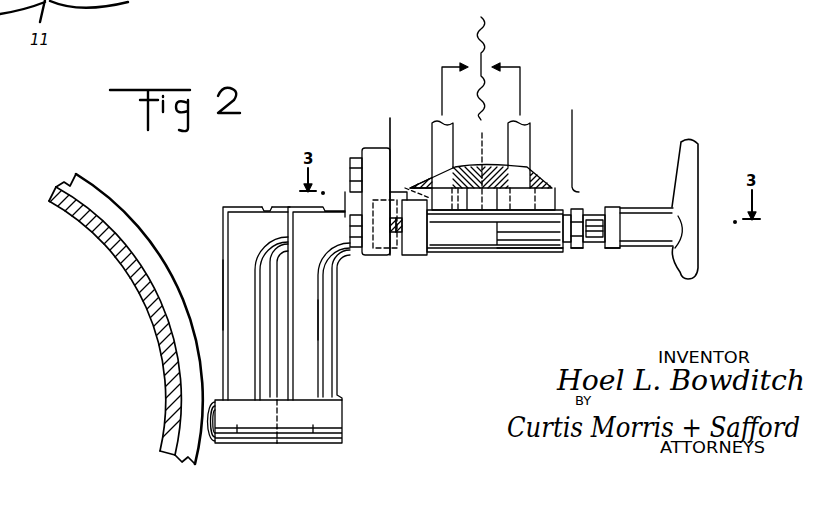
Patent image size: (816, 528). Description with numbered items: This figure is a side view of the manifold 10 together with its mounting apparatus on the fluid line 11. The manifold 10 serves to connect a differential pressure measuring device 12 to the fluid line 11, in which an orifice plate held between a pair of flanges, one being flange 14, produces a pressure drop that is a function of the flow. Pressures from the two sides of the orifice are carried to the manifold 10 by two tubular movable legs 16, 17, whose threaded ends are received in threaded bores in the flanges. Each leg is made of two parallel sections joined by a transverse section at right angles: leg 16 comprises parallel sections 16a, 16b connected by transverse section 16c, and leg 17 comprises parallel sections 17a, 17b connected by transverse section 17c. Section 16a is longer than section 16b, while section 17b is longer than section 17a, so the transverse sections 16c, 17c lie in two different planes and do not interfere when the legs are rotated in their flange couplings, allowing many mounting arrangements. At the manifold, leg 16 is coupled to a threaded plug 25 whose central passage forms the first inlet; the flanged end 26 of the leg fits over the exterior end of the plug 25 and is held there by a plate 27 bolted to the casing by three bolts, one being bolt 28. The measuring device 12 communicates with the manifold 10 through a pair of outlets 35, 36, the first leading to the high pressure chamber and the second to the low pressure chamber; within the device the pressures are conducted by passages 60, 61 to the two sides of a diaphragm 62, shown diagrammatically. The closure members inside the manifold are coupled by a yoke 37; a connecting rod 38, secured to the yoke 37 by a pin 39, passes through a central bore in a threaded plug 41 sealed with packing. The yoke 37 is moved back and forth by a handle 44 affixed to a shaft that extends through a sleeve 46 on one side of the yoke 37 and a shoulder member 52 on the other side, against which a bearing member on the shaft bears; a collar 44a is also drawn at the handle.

The manifold 10 is at (489, 254).
The fluid line 11 is at (160, 352).
The pressure measuring device 12 is at (583, 108).
The flange 14 is at (114, 224).
The movable leg 16 is at (293, 205).
The parallel section 16a is at (314, 434).
The parallel section 16b is at (345, 214).
The transverse section 16c is at (316, 307).
The movable leg 17 is at (225, 207).
The parallel section 17a is at (238, 436).
The parallel section 17b is at (281, 214).
The transverse section 17c is at (230, 293).
The threaded plug 25 is at (397, 256).
The flanged end 26 is at (378, 252).
The plate 27 is at (377, 150).
The bolt 28 is at (350, 229).
The outlet 35 is at (416, 181).
The outlet 36 is at (539, 178).
The yoke 37 is at (600, 212).
The connecting rod 38 is at (585, 250).
The pin 39 is at (595, 210).
The threaded plug 41 is at (561, 250).
The handle 44 is at (693, 162).
The collar 44a is at (625, 210).
The sleeve 46 is at (610, 240).
The shoulder member 52 is at (577, 246).
The passage 60 is at (434, 134).
The passage 61 is at (527, 139).
The diaphragm 62 is at (483, 46).